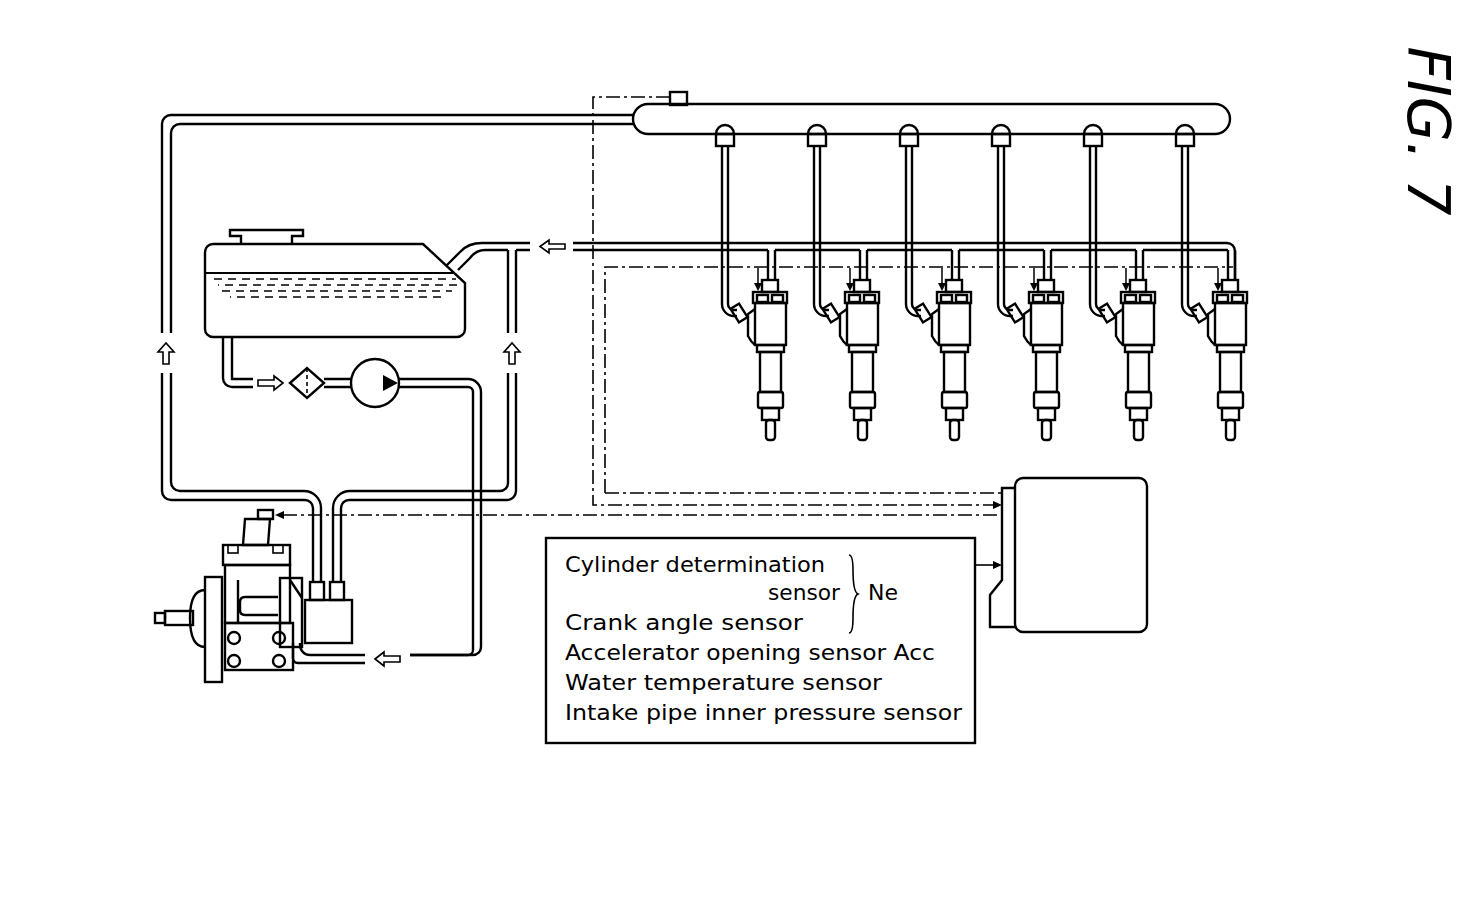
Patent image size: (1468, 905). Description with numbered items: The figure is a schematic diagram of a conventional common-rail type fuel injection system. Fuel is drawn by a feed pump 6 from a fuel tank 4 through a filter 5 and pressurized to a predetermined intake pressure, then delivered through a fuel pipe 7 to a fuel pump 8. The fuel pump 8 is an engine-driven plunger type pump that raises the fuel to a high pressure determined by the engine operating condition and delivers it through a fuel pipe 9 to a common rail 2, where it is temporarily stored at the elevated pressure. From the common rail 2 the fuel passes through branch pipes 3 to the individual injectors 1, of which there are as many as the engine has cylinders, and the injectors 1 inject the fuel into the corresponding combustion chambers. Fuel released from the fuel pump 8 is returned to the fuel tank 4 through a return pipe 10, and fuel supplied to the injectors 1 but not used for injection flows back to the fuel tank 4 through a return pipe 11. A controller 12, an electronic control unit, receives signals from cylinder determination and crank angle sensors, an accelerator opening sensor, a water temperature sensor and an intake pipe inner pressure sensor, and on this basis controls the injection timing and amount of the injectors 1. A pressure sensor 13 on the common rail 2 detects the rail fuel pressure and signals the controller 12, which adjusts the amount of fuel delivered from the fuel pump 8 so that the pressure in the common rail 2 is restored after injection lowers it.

The injector 1 is at (778, 376).
The common rail 2 is at (955, 117).
The branch pipe 3 is at (728, 202).
The fuel tank 4 is at (383, 252).
The filter 5 is at (297, 391).
The feed pump 6 is at (371, 409).
The fuel pipe 7 is at (473, 589).
The fuel pump 8 is at (257, 664).
The fuel pipe 9 is at (171, 420).
The return pipe 10 is at (517, 413).
The return pipe 11 is at (641, 245).
The controller 12 is at (1131, 560).
The pressure sensor 13 is at (684, 92).